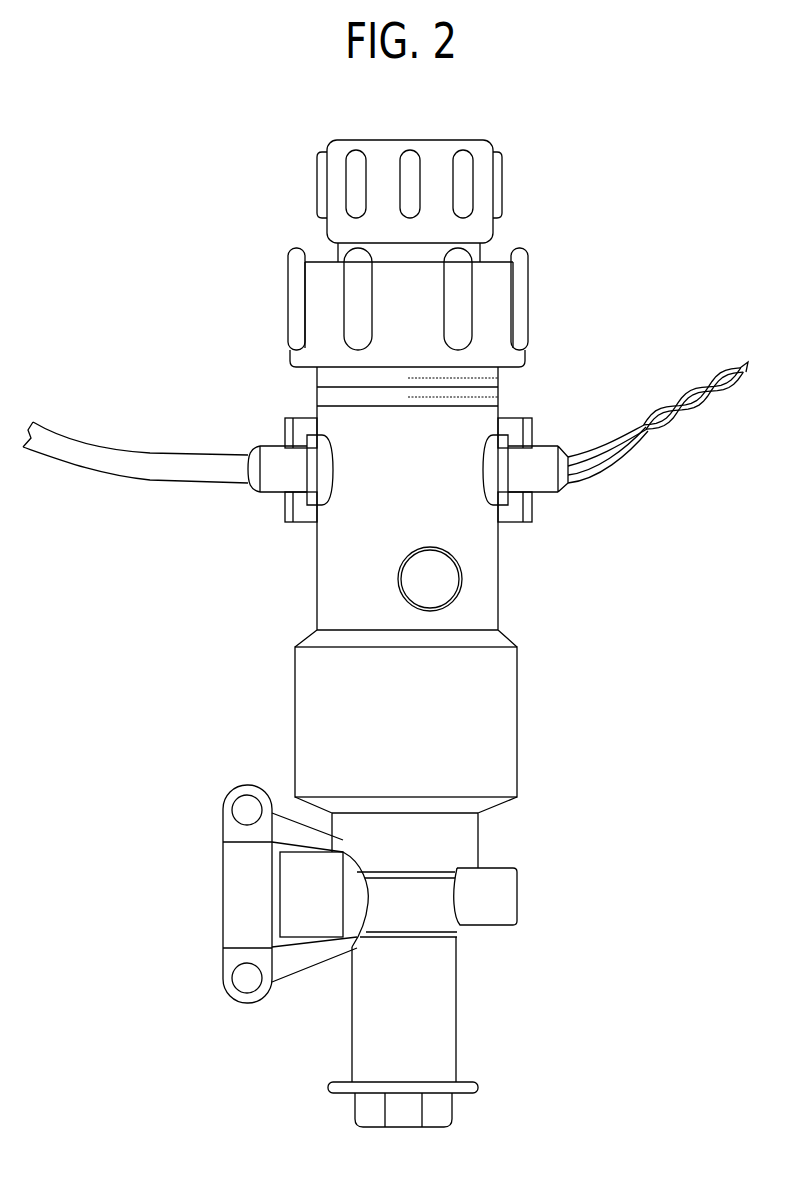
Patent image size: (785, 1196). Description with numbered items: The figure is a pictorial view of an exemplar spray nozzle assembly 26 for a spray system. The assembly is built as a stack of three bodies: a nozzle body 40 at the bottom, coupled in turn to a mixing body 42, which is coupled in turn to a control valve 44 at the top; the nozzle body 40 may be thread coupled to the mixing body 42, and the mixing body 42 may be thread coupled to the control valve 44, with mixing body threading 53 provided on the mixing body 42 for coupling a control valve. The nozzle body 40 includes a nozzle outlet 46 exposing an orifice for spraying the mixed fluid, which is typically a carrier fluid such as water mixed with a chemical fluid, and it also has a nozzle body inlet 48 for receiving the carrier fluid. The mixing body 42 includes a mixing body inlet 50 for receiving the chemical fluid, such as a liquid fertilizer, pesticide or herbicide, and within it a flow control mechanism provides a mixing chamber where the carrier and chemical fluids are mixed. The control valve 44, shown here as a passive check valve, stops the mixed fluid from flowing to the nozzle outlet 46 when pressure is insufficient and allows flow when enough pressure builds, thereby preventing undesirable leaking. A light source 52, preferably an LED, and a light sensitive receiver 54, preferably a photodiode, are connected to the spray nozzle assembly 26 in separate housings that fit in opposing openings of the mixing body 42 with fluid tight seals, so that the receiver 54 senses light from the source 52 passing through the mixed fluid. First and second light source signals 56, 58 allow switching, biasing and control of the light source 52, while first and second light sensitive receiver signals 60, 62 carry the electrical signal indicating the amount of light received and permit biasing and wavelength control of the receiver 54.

The spray nozzle assembly 26 is at (607, 117).
The nozzle body 40 is at (447, 1013).
The mixing body 42 is at (333, 592).
The control valve 44 is at (383, 160).
The nozzle outlet 46 is at (397, 1120).
The nozzle body inlet 48 is at (235, 898).
The mixing body inlet 50 is at (447, 580).
The light source 52 is at (297, 425).
The mixing body threading 53 is at (490, 392).
The light sensitive receiver 54 is at (508, 468).
The first light source signal 56 is at (250, 450).
The second light source signal 58 is at (250, 490).
The first light sensitive receiver signal 60 is at (570, 458).
The second light sensitive receiver signal 62 is at (595, 480).